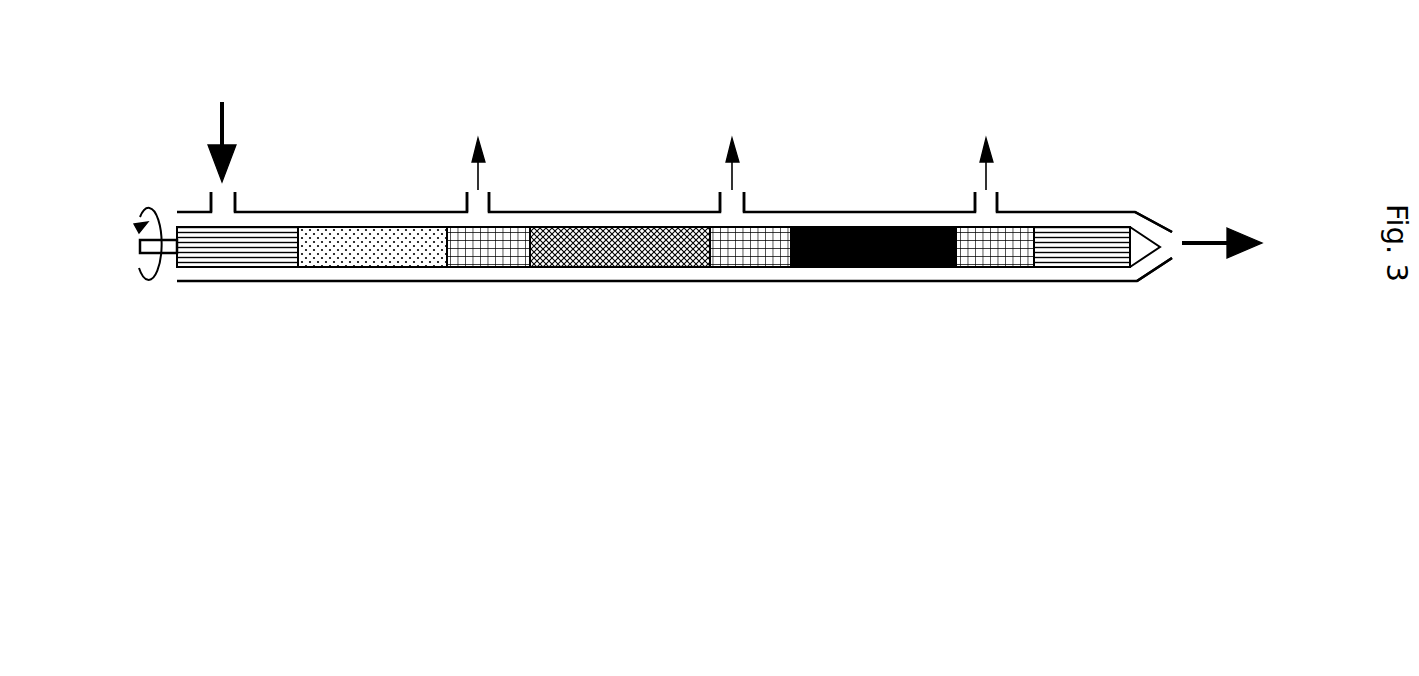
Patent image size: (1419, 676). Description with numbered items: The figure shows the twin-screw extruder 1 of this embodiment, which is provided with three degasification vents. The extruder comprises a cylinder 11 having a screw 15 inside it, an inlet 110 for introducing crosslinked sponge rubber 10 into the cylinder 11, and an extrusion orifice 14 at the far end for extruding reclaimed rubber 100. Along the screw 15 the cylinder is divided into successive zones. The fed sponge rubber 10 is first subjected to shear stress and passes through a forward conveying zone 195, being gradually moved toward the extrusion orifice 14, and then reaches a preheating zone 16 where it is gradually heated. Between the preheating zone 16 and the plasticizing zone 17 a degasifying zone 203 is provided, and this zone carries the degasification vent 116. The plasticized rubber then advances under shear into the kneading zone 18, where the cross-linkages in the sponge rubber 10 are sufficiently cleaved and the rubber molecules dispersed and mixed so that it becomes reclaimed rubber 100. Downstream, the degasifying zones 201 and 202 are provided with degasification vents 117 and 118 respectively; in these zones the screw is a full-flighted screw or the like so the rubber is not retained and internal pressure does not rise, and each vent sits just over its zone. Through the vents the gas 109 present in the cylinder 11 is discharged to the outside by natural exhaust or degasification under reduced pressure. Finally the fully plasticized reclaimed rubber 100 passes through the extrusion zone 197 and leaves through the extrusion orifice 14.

The twin-screw extruder 1 is at (347, 467).
The crosslinked rubber 10 is at (225, 120).
The cylinder 11 is at (413, 282).
The extrusion orifice 14 is at (1155, 258).
The screw 15 is at (230, 268).
The preheating zone 16 is at (350, 268).
The plasticizing zone 17 is at (603, 268).
The kneading zone 18 is at (868, 268).
The reclaimed rubber 100 is at (1203, 237).
The gas 109 is at (478, 168).
The inlet 110 is at (237, 200).
The degasification vent 116 is at (490, 198).
The degasification vent 117 is at (745, 200).
The degasification vent 118 is at (998, 203).
The forward conveying zone 195 is at (278, 268).
The extrusion zone 197 is at (1085, 268).
The degasifying zone 201 is at (750, 268).
The degasifying zone 202 is at (995, 268).
The degasifying zone 203 is at (493, 268).